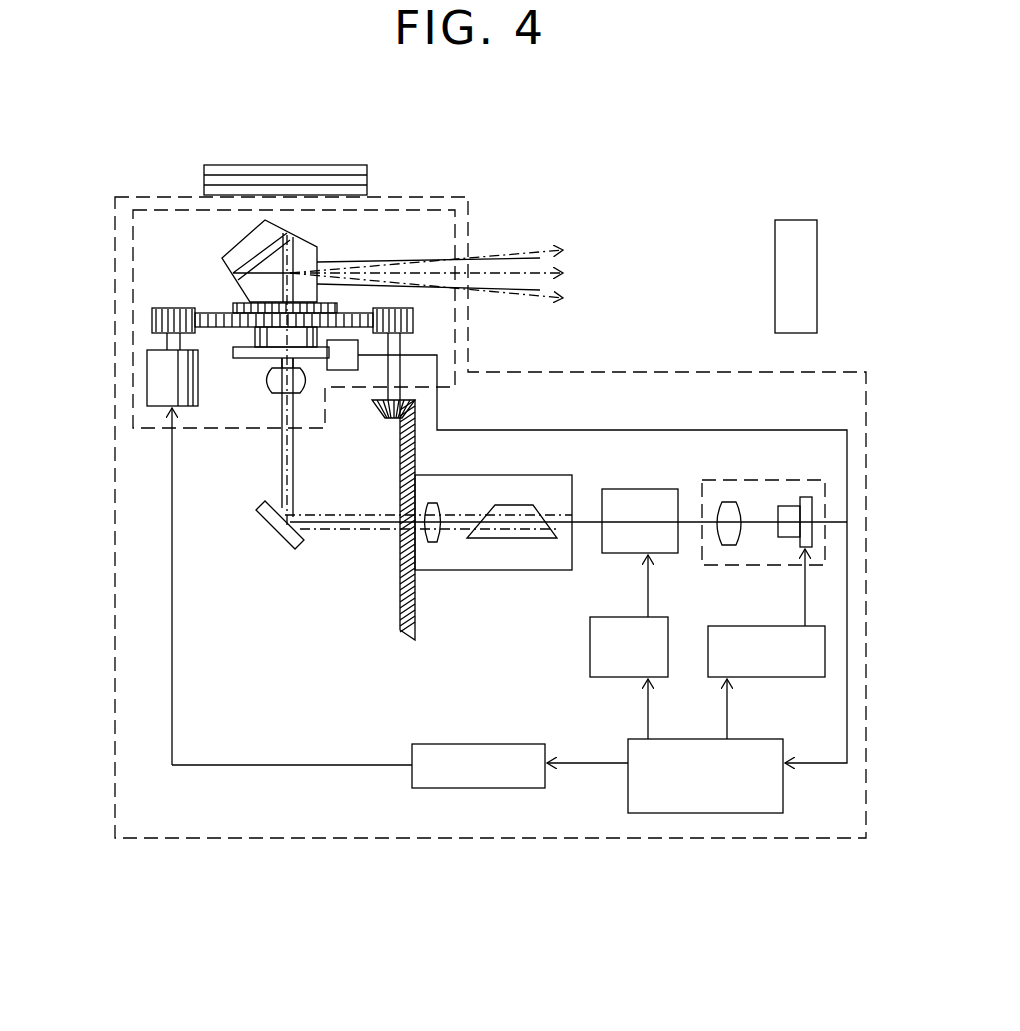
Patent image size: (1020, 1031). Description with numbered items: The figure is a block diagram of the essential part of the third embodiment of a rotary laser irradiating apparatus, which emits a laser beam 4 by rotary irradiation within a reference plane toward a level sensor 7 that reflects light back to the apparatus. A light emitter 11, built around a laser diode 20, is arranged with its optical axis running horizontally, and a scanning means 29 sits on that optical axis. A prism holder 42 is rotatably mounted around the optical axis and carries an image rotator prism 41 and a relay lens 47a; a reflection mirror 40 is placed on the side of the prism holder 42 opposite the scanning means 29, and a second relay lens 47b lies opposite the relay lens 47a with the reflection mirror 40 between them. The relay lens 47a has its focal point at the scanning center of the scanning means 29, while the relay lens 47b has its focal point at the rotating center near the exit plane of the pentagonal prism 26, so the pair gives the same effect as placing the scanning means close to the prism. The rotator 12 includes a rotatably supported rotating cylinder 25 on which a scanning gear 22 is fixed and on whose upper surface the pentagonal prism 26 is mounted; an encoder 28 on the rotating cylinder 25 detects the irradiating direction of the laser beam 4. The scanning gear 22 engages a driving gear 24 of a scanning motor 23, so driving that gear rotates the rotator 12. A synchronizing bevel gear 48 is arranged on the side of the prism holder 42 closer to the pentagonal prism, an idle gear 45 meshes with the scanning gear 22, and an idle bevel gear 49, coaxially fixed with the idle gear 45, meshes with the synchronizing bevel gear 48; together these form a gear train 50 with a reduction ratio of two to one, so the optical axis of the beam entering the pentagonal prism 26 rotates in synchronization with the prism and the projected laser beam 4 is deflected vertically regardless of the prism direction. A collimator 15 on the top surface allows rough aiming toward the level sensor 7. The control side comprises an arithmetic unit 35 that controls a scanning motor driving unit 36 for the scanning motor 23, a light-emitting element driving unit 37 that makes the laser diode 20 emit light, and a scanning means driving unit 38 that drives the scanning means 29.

The laser beam 4 is at (547, 277).
The level sensor 7 is at (775, 270).
The light emitter 11 is at (787, 480).
The rotator 12 is at (135, 283).
The collimator 15 is at (290, 165).
The laser diode 20 is at (818, 522).
The scanning gear 22 is at (213, 313).
The scanning motor 23 is at (147, 383).
The driving gear 24 is at (152, 323).
The rotating cylinder 25 is at (255, 332).
The pentagonal prism 26 is at (320, 257).
The encoder 28 is at (358, 343).
The scanning means 29 is at (640, 488).
The arithmetic unit 35 is at (752, 815).
The scanning motor driving unit 36 is at (472, 790).
The light-emitting element driving unit 37 is at (825, 652).
The scanning means driving unit 38 is at (668, 640).
The reflection mirror 40 is at (288, 547).
The image rotator prism 41 is at (522, 505).
The prism holder 42 is at (505, 570).
The idle gear 45 is at (413, 318).
The relay lens 47a is at (432, 542).
The relay lens 47b is at (265, 393).
The synchronizing bevel gear 48 is at (400, 583).
The idle bevel gear 49 is at (373, 410).
The gear train 50 is at (422, 417).